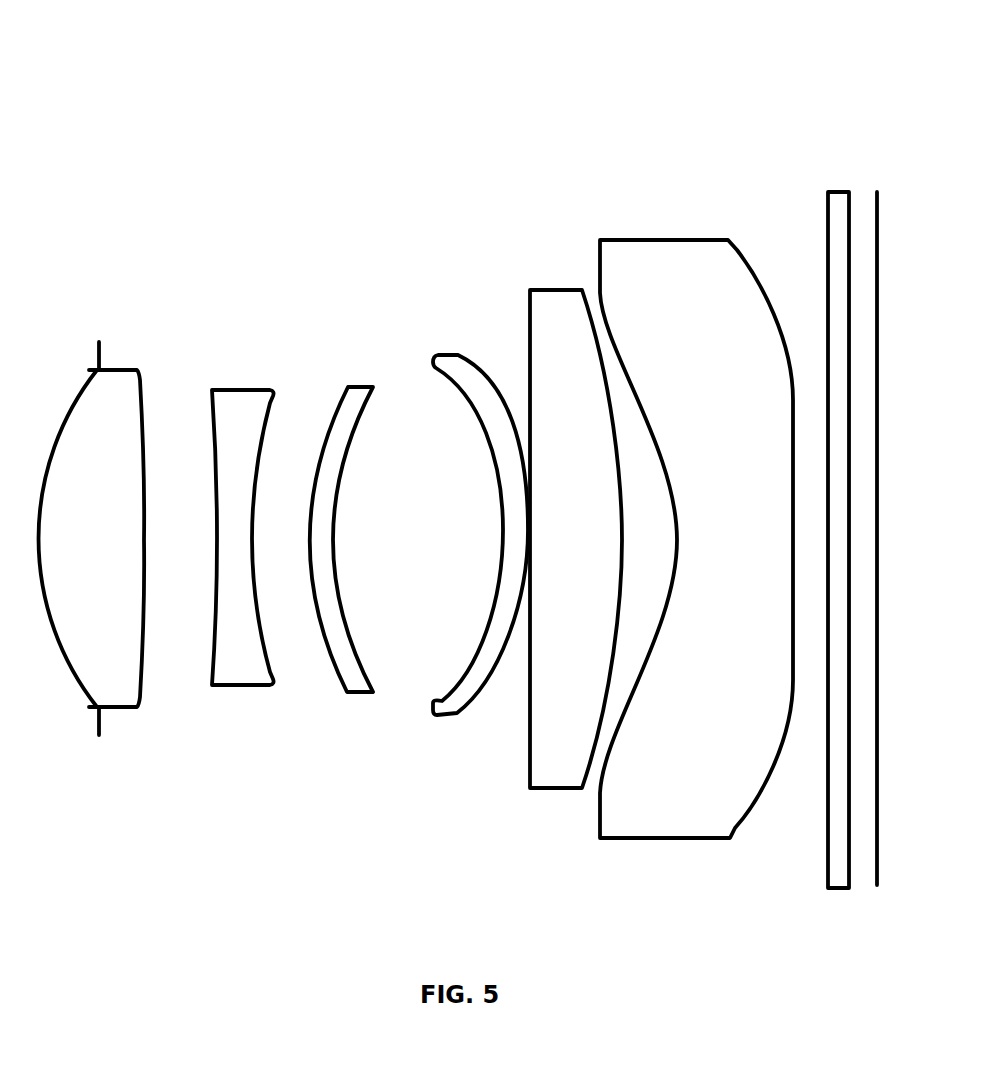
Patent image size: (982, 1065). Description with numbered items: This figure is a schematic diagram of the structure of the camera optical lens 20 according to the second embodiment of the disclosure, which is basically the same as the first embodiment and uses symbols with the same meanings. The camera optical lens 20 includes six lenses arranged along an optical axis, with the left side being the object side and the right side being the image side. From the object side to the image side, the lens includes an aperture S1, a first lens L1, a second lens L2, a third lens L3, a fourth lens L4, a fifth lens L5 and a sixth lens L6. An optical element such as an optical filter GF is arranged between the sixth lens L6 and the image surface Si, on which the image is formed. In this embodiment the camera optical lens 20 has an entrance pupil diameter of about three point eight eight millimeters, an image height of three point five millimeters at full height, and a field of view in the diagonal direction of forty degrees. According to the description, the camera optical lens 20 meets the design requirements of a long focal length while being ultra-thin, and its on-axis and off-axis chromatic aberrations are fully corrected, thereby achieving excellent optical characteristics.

The camera optical lens 20 is at (460, 44).
The aperture S1 is at (101, 527).
The first lens L1 is at (92, 524).
The second lens L2 is at (243, 522).
The third lens L3 is at (341, 527).
The fourth lens L4 is at (480, 522).
The fifth lens L5 is at (576, 525).
The sixth lens L6 is at (696, 523).
The optical filter GF is at (839, 526).
The image surface Si is at (877, 525).